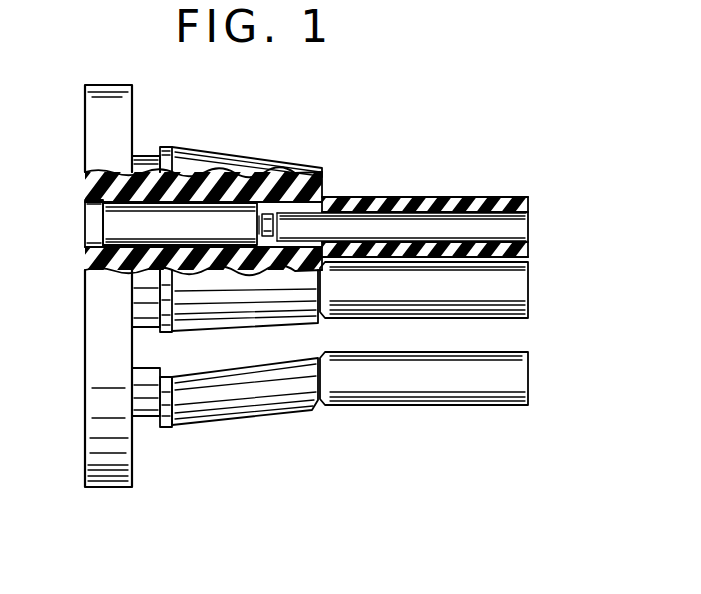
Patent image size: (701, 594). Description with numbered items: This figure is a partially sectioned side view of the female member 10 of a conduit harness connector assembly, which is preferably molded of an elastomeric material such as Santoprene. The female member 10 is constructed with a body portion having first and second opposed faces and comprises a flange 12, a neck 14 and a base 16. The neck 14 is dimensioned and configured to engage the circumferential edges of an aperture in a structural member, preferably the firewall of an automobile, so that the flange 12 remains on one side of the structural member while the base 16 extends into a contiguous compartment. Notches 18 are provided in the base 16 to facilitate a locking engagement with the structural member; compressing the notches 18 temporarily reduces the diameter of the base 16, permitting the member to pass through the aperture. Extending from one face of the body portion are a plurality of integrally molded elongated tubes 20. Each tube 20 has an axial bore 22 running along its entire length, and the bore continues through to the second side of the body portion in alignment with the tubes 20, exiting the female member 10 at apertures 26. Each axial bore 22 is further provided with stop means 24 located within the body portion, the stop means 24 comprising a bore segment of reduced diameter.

The female member 10 is at (362, 151).
The flange 12 is at (90, 431).
The neck 14 is at (145, 418).
The base 16 is at (258, 416).
The notches 18 is at (235, 363).
The elongated tubes 20 is at (528, 228).
The axial bore 22 is at (470, 215).
The stop means 24 is at (264, 203).
The apertures 26 is at (110, 232).